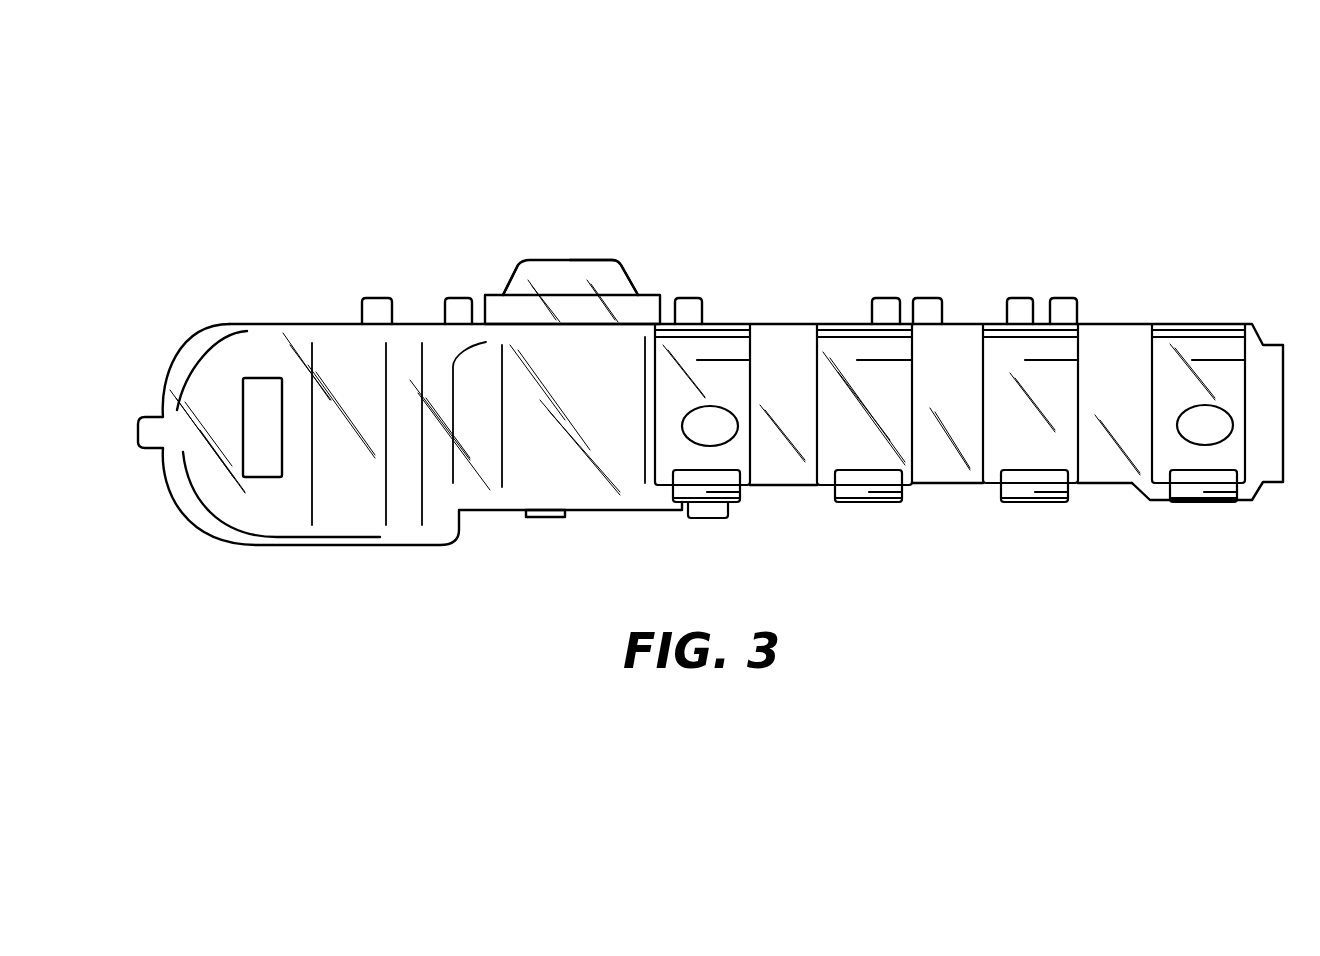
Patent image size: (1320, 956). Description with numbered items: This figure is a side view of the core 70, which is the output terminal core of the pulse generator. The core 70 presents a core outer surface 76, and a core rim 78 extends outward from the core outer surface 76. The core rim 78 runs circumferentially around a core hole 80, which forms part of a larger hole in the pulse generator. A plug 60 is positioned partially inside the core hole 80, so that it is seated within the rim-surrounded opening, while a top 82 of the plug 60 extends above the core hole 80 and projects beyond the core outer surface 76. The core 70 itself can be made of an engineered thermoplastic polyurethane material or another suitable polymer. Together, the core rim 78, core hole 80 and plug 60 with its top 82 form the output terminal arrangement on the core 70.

The core 70 is at (927, 160).
The core outer surface 76 is at (850, 330).
The core rim 78 is at (487, 295).
The plug 60 is at (558, 246).
The core hole 80 is at (503, 293).
The top 82 is at (610, 258).